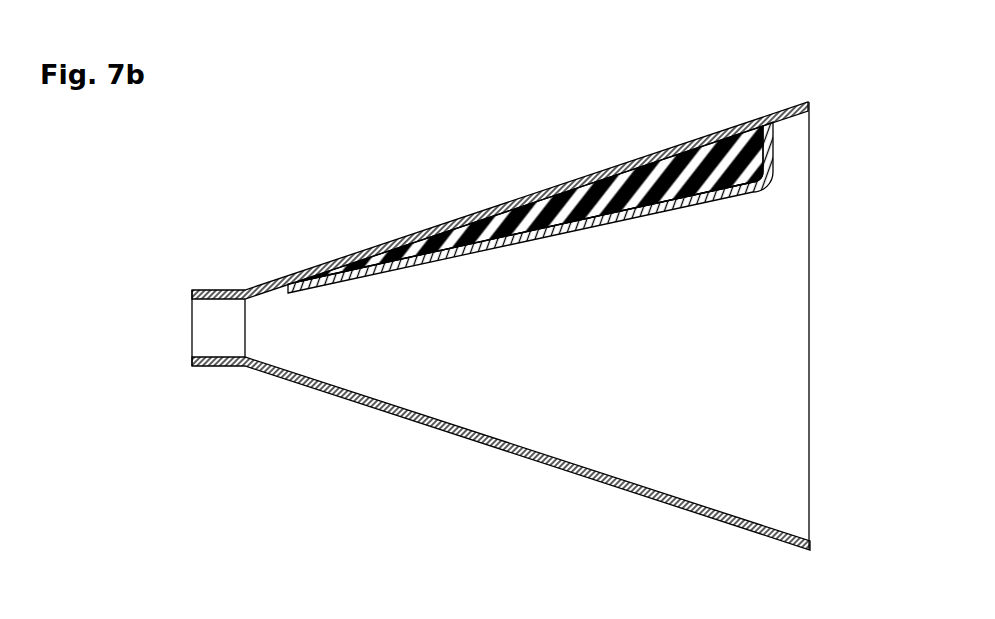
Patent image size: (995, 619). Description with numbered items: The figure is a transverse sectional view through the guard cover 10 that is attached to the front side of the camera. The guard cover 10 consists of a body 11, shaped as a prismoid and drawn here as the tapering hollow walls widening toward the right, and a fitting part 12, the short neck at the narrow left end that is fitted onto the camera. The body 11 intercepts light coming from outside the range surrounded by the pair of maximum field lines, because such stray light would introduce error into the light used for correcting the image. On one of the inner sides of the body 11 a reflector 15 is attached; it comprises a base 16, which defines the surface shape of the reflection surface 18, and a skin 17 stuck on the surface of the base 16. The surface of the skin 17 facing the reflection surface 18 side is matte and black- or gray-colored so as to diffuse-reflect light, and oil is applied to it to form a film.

The guard cover 10 is at (499, 344).
The body 11 is at (466, 441).
The fitting part 12 is at (222, 367).
The reflector 15 is at (530, 185).
The base 16 is at (521, 246).
The skin 17 is at (622, 223).
The reflection surface 18 is at (563, 236).